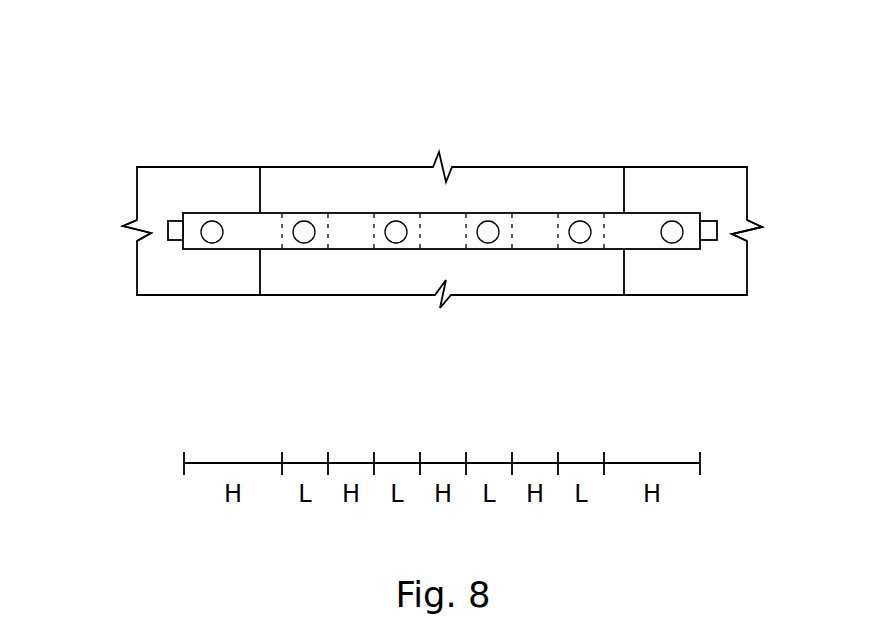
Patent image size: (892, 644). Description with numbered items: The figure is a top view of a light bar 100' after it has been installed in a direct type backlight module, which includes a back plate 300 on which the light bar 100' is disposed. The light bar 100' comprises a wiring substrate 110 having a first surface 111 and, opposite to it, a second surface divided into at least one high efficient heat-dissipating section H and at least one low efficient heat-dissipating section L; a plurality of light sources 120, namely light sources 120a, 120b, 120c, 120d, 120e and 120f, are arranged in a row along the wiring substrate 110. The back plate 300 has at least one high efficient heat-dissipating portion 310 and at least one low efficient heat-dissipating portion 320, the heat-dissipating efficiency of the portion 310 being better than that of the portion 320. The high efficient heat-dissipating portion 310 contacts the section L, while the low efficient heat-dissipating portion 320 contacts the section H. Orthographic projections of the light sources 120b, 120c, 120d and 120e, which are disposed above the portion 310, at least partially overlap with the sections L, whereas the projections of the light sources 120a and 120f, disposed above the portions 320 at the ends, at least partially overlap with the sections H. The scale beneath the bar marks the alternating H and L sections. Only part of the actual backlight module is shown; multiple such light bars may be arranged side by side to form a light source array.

The light bar 100' is at (422, 262).
The wiring substrate 110 is at (178, 228).
The first surface 111 is at (621, 240).
The light sources 120 is at (474, 140).
The light source 120a is at (213, 231).
The light source 120b is at (305, 231).
The light source 120c is at (397, 231).
The light source 120d is at (489, 231).
The light source 120e is at (581, 231).
The light source 120f is at (697, 167).
The back plate 300 is at (442, 301).
The high efficient heat-dissipating portion 310 is at (320, 297).
The low efficient heat-dissipating portion 320 is at (355, 378).